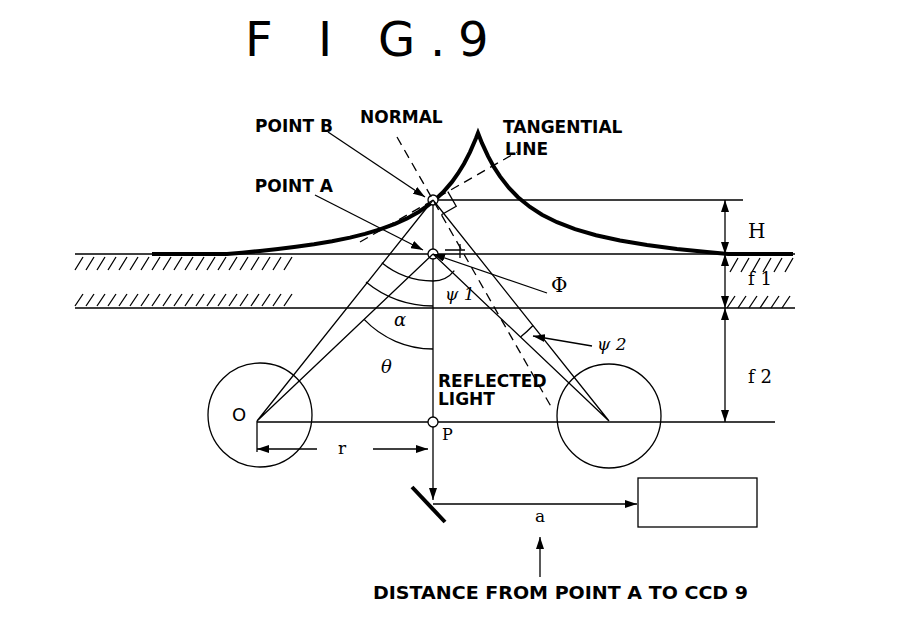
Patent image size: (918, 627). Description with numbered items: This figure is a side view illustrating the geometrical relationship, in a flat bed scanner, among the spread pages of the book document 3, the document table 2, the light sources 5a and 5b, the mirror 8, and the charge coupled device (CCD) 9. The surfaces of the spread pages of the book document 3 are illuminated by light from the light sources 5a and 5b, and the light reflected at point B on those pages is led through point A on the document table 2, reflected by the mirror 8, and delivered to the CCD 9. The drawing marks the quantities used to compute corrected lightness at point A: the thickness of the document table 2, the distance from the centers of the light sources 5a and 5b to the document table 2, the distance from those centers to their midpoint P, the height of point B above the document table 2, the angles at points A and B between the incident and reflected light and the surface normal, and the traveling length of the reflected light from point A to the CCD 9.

The document table 2 is at (88, 280).
The book document 3 is at (598, 235).
The light source 5a is at (220, 425).
The light source 5b is at (632, 433).
The mirror 8 is at (432, 517).
The charge coupled device (CCD) 9 is at (718, 514).